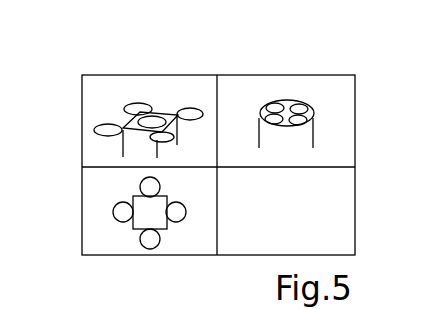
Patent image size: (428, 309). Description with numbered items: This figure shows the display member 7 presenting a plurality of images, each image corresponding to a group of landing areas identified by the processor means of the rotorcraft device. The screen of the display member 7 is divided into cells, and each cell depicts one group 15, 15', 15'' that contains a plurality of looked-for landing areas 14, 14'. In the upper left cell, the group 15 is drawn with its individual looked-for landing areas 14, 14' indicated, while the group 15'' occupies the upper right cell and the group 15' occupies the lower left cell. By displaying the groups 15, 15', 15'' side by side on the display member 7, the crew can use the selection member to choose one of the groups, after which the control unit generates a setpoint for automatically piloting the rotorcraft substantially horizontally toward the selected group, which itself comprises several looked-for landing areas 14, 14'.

The display member 7 is at (296, 75).
The looked-for landing area 14 is at (124, 65).
The looked-for landing area 14' is at (197, 68).
The group 15 is at (112, 87).
The group 15' is at (96, 236).
The group 15'' is at (333, 110).